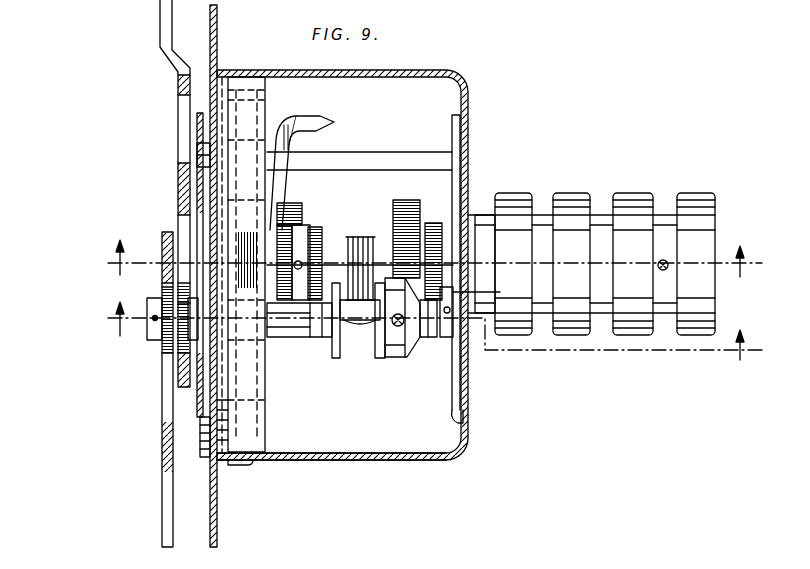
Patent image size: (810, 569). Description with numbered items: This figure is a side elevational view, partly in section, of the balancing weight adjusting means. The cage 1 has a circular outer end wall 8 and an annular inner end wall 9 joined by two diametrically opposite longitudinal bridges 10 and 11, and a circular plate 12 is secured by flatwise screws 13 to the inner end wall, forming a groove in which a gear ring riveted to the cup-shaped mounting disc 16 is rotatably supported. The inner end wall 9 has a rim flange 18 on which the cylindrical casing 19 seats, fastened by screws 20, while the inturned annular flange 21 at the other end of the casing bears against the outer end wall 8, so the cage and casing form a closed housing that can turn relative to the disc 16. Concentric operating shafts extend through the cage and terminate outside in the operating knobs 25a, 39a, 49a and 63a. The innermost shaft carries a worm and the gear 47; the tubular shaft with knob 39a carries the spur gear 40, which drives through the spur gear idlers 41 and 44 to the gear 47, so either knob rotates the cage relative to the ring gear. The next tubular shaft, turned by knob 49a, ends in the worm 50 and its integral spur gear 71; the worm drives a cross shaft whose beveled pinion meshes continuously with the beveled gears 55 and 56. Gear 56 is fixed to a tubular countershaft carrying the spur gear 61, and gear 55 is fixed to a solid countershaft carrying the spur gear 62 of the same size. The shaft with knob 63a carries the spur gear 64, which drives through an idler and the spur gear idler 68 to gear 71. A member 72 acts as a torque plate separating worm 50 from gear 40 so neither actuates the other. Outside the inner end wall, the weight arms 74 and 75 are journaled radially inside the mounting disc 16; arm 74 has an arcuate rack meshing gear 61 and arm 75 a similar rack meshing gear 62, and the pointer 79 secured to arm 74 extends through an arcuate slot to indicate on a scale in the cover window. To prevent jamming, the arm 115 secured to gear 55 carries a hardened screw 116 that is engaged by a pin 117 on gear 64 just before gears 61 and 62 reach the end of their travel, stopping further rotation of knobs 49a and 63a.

The housing 1 is at (420, 70).
The circular outer end wall 8 is at (465, 425).
The annular inner end wall 9 is at (213, 423).
The longitudinal bridge 10 is at (358, 340).
The longitudinal bridge 11 is at (375, 152).
The circular plate 12 is at (197, 173).
The flatwise screws 13 is at (198, 148).
The cup-shaped mounting disc 16 is at (218, 42).
The rim flange 18 is at (265, 95).
The cylindrical casing or cover 19 is at (348, 460).
The screws 20 is at (240, 465).
The inturned annular flange 21 is at (468, 140).
The operating knob 25a is at (697, 193).
The operating knob 39a is at (633, 193).
The spur gear 40 is at (315, 226).
The spur gear idler 41 is at (301, 338).
The spur gear idler 44 is at (290, 206).
The gear 47 is at (292, 207).
The operating knob 49a is at (570, 193).
The worm 50 is at (368, 236).
The beveled gear 55 is at (382, 359).
The beveled gear 56 is at (337, 359).
The spur gear 61 is at (180, 360).
The spur gear 62 is at (162, 350).
The operating knob 63a is at (510, 193).
The spur gear 64 is at (432, 224).
The spur gear idler 68 is at (406, 201).
The spur gear 71 is at (382, 237).
The member 72 is at (351, 232).
The weight arm 74 is at (160, 32).
The weight arm 75 is at (162, 510).
The pointer 79 is at (316, 120).
The arm 115 is at (420, 357).
The hardened screw 116 is at (430, 340).
The pin 117 is at (490, 292).